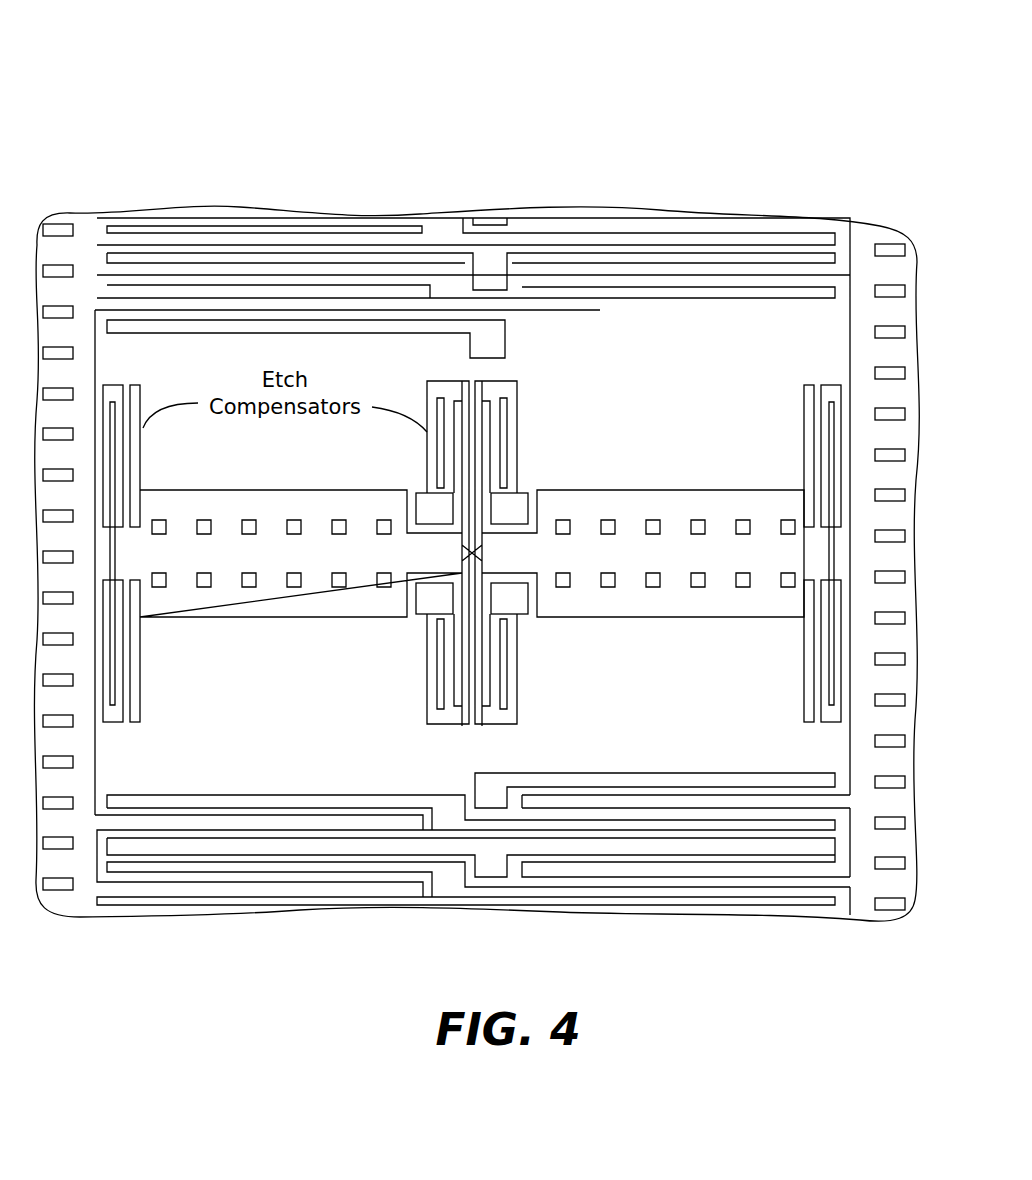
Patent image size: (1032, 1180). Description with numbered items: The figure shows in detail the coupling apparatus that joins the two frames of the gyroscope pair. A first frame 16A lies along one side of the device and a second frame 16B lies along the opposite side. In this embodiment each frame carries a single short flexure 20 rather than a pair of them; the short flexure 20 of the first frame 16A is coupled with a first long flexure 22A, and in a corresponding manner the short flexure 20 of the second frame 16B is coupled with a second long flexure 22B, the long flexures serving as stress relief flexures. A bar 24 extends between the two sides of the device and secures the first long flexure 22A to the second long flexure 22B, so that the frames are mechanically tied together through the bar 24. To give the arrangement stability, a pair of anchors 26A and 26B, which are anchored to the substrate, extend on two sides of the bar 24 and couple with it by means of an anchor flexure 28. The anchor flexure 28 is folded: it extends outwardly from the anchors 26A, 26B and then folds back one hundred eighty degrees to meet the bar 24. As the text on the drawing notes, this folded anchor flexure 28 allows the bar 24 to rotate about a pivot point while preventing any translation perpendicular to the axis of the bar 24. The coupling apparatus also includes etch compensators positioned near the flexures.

The first frame 16A is at (83, 880).
The second frame 16B is at (862, 255).
The short flexure 20 is at (838, 553).
The first long flexure 22A is at (120, 663).
The second long flexure 22B is at (828, 690).
The bar 24 is at (633, 587).
The anchor 26A is at (518, 504).
The anchor 26B is at (510, 600).
The anchor flexure 28 is at (475, 553).